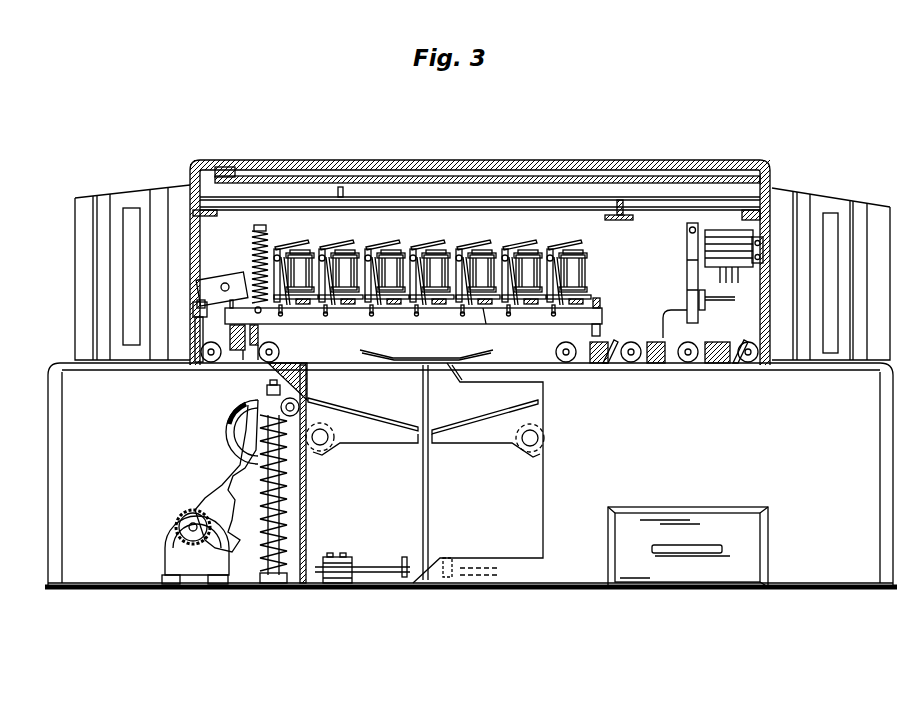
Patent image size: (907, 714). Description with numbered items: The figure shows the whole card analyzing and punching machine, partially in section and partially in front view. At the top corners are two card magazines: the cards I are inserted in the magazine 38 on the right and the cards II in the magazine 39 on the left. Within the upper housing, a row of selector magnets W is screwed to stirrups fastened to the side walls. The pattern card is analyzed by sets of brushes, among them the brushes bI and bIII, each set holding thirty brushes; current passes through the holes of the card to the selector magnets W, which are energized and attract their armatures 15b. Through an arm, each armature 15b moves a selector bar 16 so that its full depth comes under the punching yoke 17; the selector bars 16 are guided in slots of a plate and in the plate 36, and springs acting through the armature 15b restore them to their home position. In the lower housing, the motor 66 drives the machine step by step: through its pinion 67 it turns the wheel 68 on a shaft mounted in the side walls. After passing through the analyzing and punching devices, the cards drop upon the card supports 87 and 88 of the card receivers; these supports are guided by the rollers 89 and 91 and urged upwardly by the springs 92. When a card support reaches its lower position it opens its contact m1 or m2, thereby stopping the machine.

The magazine 39 is at (130, 200).
The magazine 38 is at (838, 208).
The punching yoke 17 is at (215, 282).
The armature 15b is at (295, 245).
The selector magnet W is at (345, 265).
The selector bar 16 is at (592, 317).
The plate 36 is at (598, 298).
The brushes bIII is at (610, 360).
The brushes bI is at (740, 360).
The roller 91 is at (280, 400).
The spring 92 is at (280, 547).
The motor 66 is at (180, 552).
The pinion 67 is at (193, 537).
The wheel 68 is at (235, 532).
The card support 88 is at (385, 433).
The roller 89 is at (330, 446).
The card support 87 is at (475, 430).
The contact m2 is at (392, 572).
The contact m1 is at (462, 570).